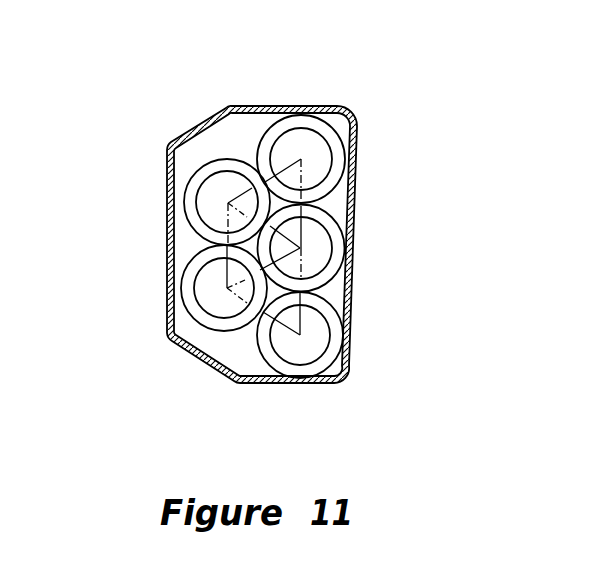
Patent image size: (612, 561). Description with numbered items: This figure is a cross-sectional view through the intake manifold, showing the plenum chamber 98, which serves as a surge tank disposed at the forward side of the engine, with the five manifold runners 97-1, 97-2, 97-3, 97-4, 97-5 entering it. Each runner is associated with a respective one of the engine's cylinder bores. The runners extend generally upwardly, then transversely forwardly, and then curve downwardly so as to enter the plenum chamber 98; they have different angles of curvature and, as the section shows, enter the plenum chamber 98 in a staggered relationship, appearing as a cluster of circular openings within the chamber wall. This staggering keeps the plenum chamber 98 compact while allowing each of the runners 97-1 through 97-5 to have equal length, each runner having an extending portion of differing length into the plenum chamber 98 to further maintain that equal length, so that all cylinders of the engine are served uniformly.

The plenum chamber 98 is at (357, 172).
The manifold runner 97-1 is at (330, 348).
The manifold runner 97-2 is at (193, 300).
The manifold runner 97-3 is at (338, 248).
The manifold runner 97-4 is at (188, 201).
The manifold runner 97-5 is at (312, 130).